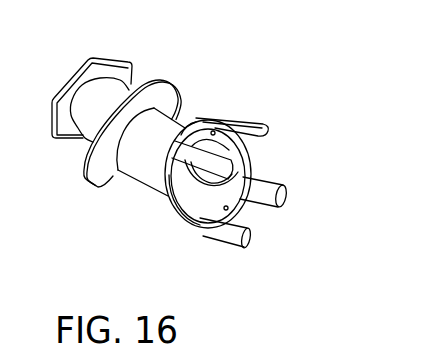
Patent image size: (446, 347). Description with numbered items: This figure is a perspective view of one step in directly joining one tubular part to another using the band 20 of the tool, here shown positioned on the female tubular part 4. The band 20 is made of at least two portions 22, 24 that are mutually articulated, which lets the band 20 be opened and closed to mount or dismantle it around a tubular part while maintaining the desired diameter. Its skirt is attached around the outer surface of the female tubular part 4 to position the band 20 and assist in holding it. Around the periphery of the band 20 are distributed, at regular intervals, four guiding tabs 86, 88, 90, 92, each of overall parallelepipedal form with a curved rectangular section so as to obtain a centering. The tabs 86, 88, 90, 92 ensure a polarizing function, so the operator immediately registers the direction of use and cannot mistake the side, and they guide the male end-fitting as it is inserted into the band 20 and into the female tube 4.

The female tubular part 4 is at (163, 136).
The band 20 is at (207, 119).
The portion of the band 22 is at (245, 161).
The portion of the band 24 is at (192, 217).
The guiding tab 86 is at (255, 124).
The guiding tab 88 is at (287, 191).
The guiding tab 90 is at (233, 239).
The guiding tab 92 is at (170, 200).